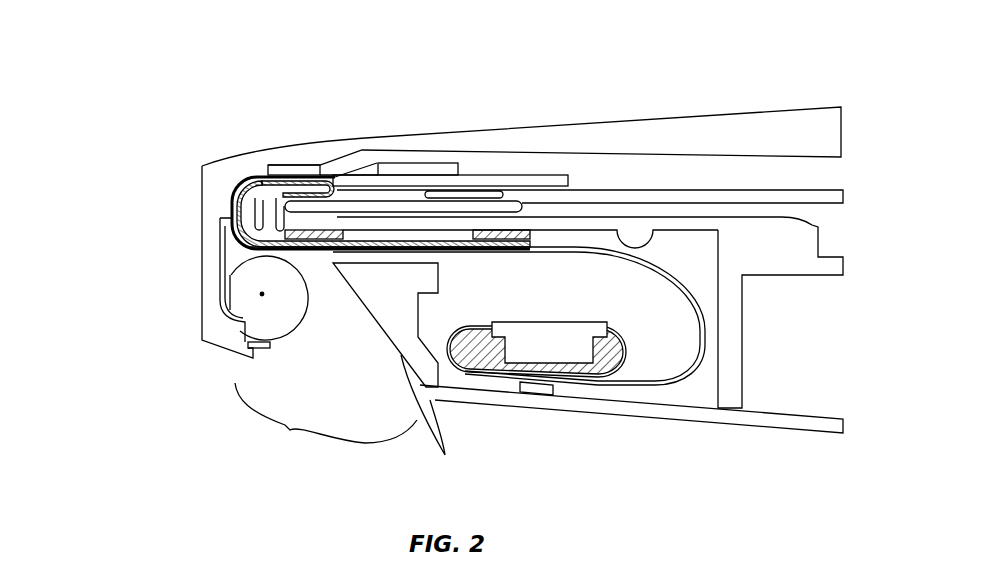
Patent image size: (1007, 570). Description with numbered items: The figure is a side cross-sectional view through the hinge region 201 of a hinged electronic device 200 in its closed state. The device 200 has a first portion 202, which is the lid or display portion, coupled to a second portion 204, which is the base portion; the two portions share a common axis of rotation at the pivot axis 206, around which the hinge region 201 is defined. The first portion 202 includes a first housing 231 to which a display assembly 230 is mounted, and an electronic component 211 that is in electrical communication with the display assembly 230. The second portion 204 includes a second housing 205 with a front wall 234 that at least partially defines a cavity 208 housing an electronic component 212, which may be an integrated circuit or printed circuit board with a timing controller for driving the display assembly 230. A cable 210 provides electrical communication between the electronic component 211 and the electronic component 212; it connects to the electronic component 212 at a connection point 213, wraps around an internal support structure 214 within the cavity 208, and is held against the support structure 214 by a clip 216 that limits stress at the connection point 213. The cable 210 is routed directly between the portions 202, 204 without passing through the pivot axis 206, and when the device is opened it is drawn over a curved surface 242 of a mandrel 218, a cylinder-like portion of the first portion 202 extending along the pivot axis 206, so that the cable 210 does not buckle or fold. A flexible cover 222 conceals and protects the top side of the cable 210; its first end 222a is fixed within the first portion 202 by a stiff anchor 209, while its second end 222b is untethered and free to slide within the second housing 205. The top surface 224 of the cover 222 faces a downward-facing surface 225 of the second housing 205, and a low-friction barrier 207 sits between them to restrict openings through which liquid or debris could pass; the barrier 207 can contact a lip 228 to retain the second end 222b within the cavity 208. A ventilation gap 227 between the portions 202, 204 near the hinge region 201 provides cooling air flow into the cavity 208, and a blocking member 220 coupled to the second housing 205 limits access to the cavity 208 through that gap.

The electronic device 200 is at (160, 108).
The hinge region 201 is at (188, 304).
The first portion 202 is at (542, 106).
The second portion 204 is at (728, 447).
The second housing 205 is at (749, 258).
The pivot axis 206 is at (262, 294).
The barrier 207 is at (537, 239).
The cavity 208 is at (590, 301).
The anchor 209 is at (305, 185).
The cable 210 is at (703, 331).
The electronic component 211 is at (402, 162).
The electronic component 212 is at (548, 324).
The connection point 213 is at (490, 325).
The internal support structure 214 is at (622, 343).
The clip 216 is at (551, 394).
The mandrel 218 is at (305, 306).
The blocking member 220 is at (399, 369).
The cover 222 is at (455, 250).
The first end 222a is at (318, 188).
The second end 222b is at (540, 244).
The top surface 224 is at (470, 234).
The downward-facing surface 225 is at (600, 250).
The ventilation gap 227 is at (326, 422).
The lip 228 is at (405, 208).
The display assembly 230 is at (833, 187).
The first housing 231 is at (772, 141).
The front wall 234 is at (718, 250).
The curved surface 242 is at (292, 333).